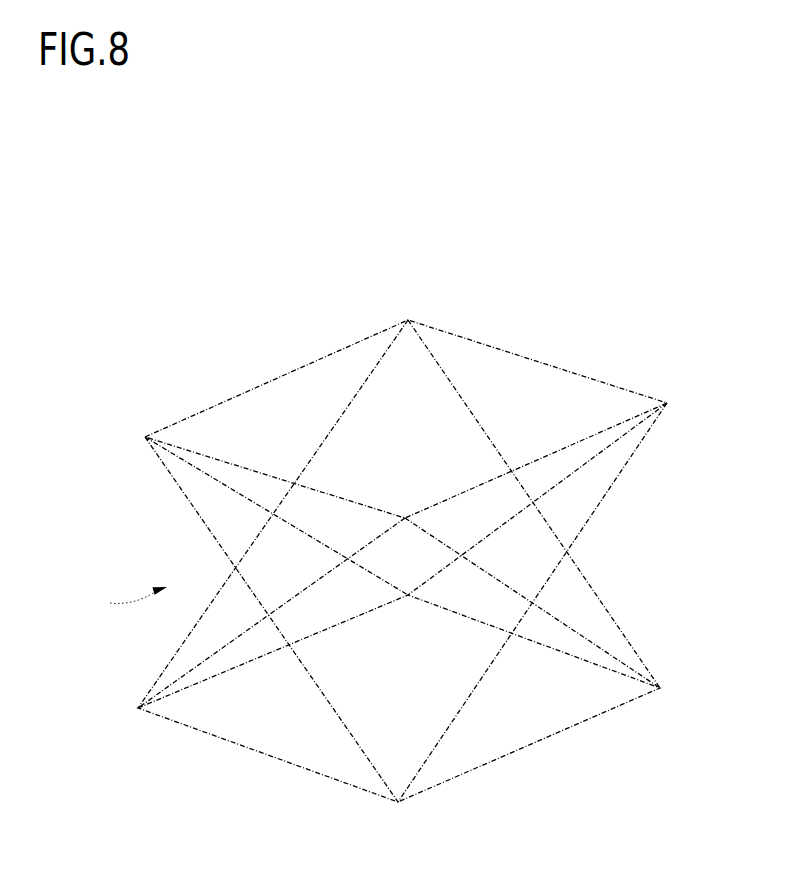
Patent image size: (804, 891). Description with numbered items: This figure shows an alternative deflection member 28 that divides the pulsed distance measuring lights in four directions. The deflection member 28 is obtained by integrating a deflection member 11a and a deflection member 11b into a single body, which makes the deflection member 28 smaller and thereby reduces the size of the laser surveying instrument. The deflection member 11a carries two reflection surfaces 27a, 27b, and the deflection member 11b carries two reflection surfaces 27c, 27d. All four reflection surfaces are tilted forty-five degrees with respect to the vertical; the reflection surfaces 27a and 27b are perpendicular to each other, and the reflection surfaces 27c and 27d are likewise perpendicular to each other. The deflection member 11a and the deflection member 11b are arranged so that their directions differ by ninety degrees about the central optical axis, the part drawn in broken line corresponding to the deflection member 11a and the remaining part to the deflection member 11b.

The deflection member 11a is at (253, 380).
The deflection member 11b is at (592, 530).
The reflection surface 27a is at (233, 513).
The reflection surface 27b is at (573, 470).
The reflection surface 27c is at (552, 642).
The reflection surface 27d is at (493, 373).
The deflection member 28 is at (120, 599).